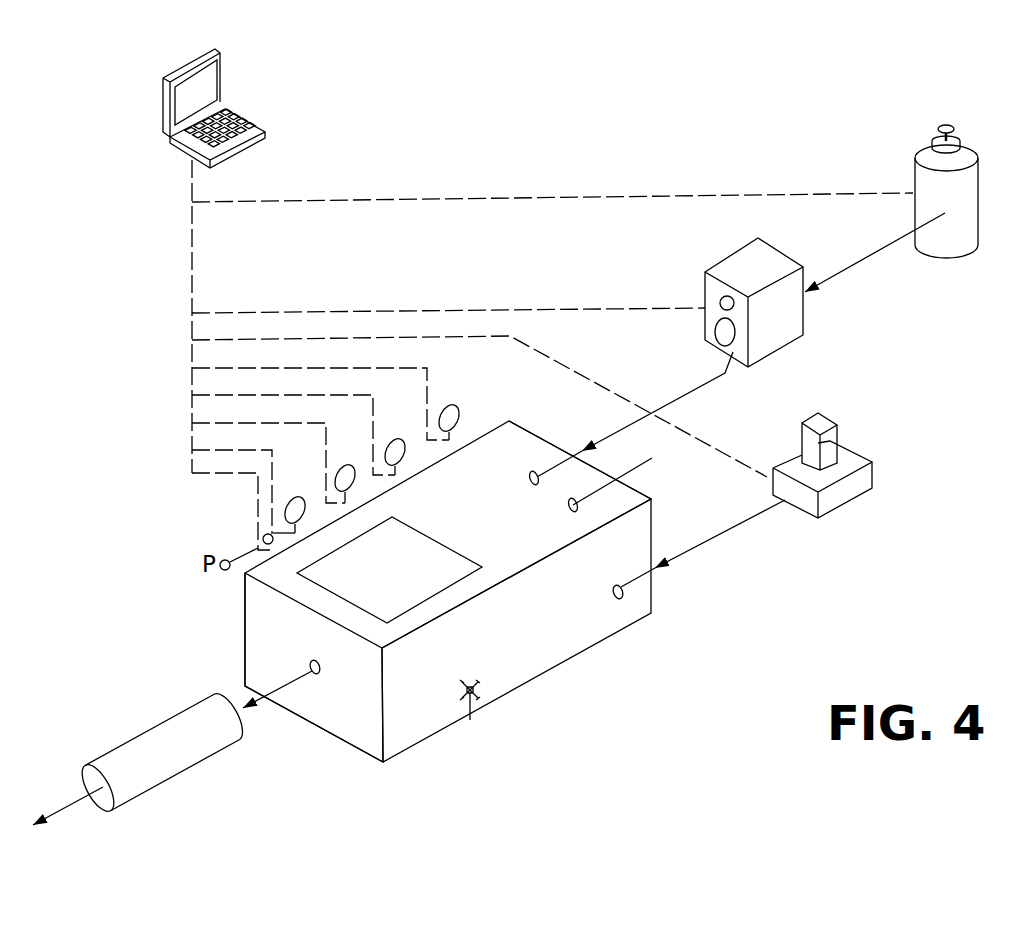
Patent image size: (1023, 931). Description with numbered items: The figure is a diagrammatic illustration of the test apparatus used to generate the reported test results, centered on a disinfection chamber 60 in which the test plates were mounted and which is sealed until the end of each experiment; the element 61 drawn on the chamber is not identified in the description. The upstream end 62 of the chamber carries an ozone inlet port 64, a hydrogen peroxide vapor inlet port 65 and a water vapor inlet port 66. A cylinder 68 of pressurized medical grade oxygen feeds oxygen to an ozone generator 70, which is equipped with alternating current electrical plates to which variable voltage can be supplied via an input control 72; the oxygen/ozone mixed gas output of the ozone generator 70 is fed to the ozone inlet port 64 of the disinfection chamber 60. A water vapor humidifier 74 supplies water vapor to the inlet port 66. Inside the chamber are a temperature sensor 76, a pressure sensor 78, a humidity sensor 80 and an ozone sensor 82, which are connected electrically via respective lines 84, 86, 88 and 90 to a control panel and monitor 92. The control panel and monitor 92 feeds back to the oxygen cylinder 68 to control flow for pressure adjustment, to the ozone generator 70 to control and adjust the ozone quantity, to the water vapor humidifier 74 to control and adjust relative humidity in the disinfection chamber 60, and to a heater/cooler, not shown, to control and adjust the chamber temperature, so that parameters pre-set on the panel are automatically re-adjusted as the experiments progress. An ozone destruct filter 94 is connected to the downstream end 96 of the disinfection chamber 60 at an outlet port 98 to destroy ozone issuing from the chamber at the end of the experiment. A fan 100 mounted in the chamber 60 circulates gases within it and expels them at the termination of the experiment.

The disinfection chamber 60 is at (562, 662).
The display 61 is at (405, 615).
The upstream end 62 is at (647, 493).
The ozone inlet port 64 is at (530, 480).
The hydrogen peroxide vapor inlet port 65 is at (568, 507).
The water vapor inlet port 66 is at (620, 600).
The cylinder 68 is at (978, 189).
The ozone generator 70 is at (780, 253).
The input control 72 is at (528, 308).
The water vapor humidifier 74 is at (855, 453).
The temperature sensor 76 is at (293, 500).
The pressure sensor 78 is at (448, 409).
The humidity sensor 80 is at (346, 469).
The ozone sensor 82 is at (396, 443).
The line 84 is at (249, 485).
The line 86 is at (327, 393).
The line 88 is at (277, 454).
The line 90 is at (301, 427).
The control panel and monitor 92 is at (238, 157).
The ozone destruct filter 94 is at (167, 785).
The downstream end 96 is at (243, 642).
The outlet port 98 is at (318, 673).
The fan 100 is at (473, 693).